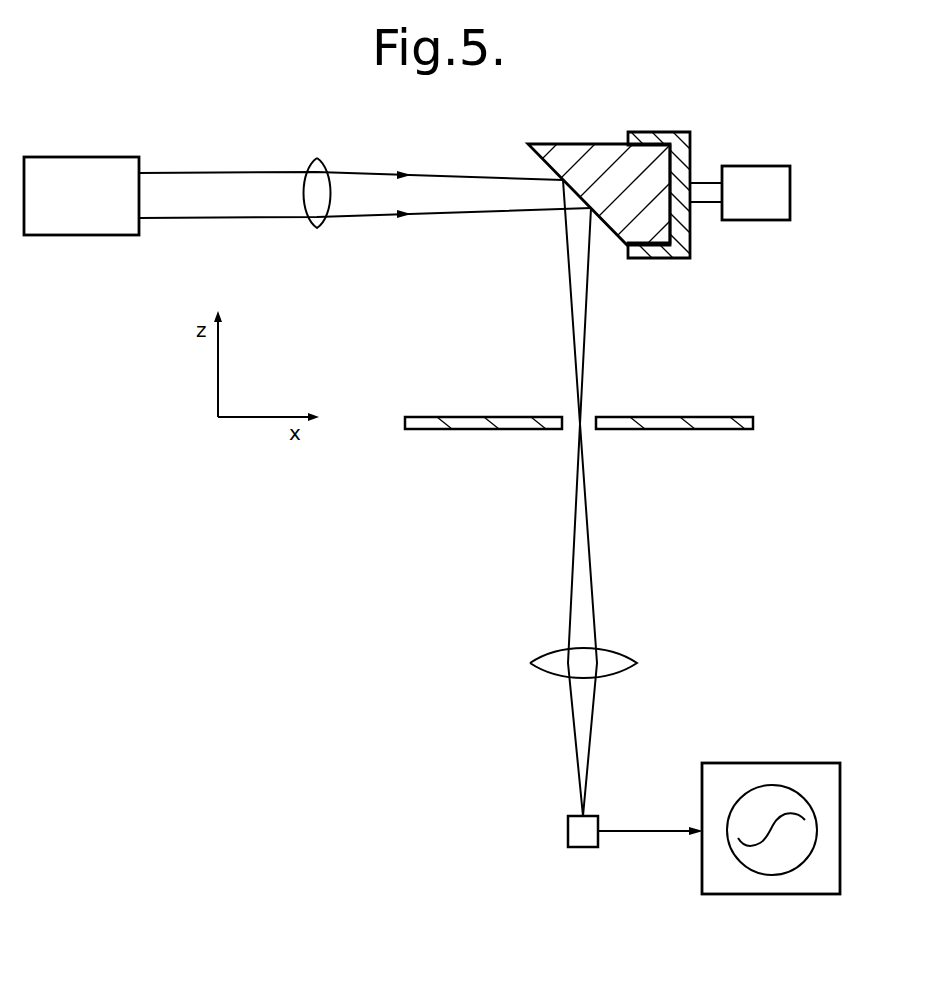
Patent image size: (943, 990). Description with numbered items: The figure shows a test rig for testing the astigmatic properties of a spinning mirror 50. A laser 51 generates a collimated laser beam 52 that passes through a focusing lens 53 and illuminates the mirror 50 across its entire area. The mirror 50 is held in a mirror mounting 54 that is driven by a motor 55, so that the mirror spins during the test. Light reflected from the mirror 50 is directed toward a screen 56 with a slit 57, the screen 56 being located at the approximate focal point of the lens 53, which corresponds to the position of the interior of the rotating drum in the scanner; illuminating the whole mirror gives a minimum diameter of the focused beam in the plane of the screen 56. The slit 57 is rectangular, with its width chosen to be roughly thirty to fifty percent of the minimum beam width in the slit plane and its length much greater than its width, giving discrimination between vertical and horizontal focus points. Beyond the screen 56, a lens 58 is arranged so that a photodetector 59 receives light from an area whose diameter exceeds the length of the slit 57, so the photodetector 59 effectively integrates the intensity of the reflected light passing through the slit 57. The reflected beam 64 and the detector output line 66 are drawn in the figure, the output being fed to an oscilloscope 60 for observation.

The spinning mirror 50 is at (580, 144).
The laser 51 is at (100, 157).
The collimated laser beam 52 is at (221, 173).
The focusing lens 53 is at (322, 158).
The mirror mounting 54 is at (673, 132).
The motor 55 is at (768, 166).
The screen 56 is at (452, 417).
The slit 57 is at (585, 423).
The lens 58 is at (542, 656).
The photodetector 59 is at (568, 831).
The oscilloscope 60 is at (758, 763).
The reflected light beam 64 is at (567, 269).
The detector output signal 66 is at (646, 833).